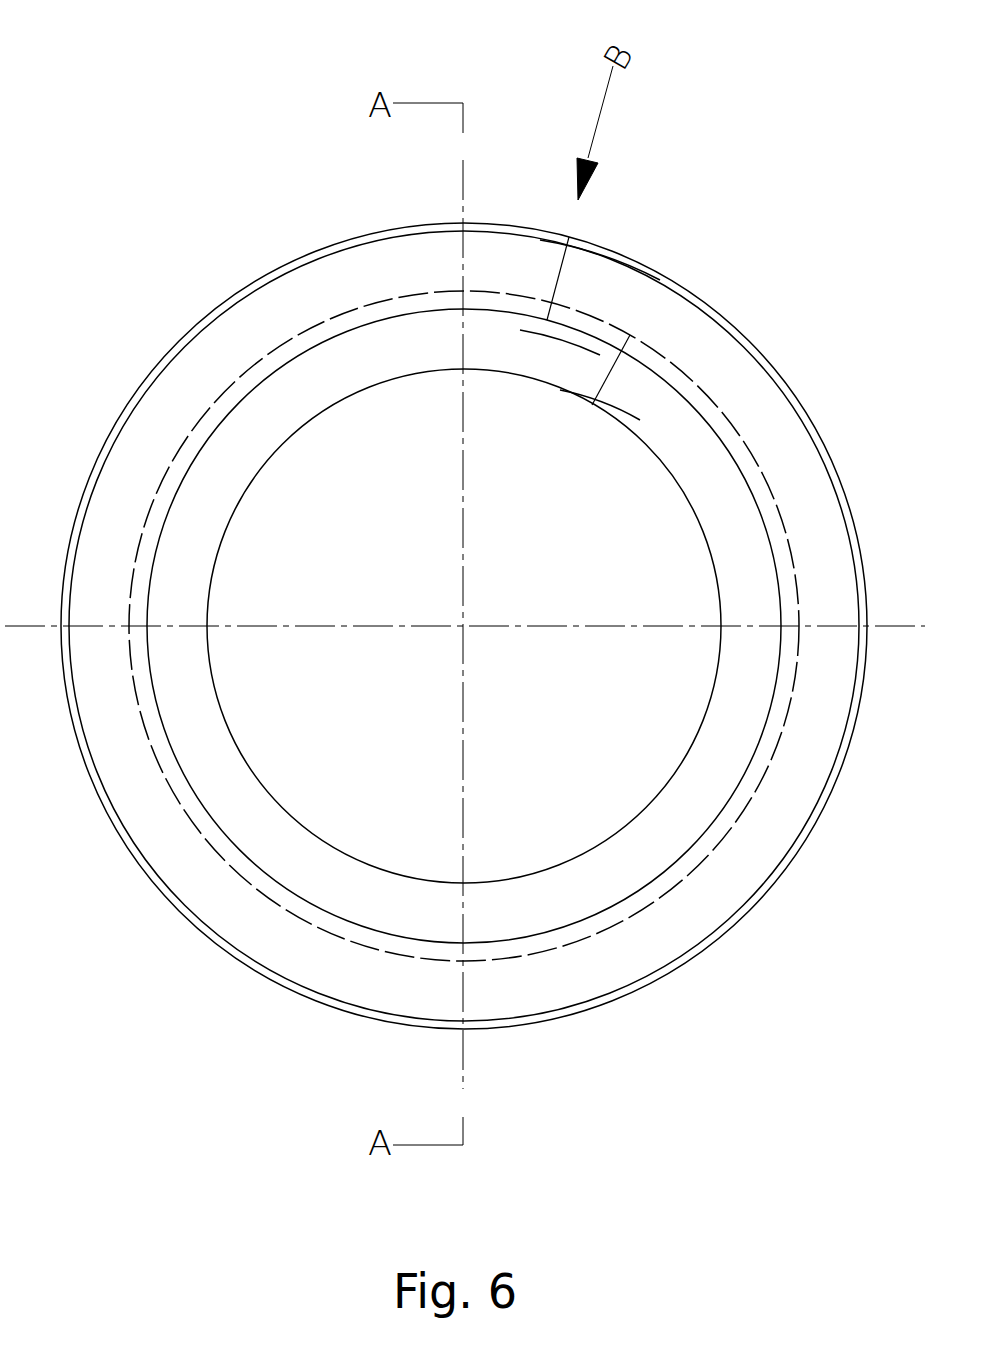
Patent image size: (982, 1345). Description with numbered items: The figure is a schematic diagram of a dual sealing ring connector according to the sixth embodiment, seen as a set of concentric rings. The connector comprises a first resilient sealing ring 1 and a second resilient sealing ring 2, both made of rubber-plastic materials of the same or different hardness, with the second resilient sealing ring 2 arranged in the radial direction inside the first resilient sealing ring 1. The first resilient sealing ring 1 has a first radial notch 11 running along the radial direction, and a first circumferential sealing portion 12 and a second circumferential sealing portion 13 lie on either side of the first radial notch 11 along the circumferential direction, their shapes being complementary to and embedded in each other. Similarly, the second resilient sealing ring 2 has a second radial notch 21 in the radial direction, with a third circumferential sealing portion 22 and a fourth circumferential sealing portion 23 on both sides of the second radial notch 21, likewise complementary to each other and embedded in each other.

The first resilient sealing ring 1 is at (790, 460).
The second resilient sealing ring 2 is at (392, 363).
The first radial notch 11 is at (569, 237).
The first circumferential sealing portion 12 is at (540, 262).
The second circumferential sealing portion 13 is at (587, 265).
The second radial notch 21 is at (617, 363).
The third circumferential sealing portion 22 is at (578, 372).
The fourth circumferential sealing portion 23 is at (623, 398).